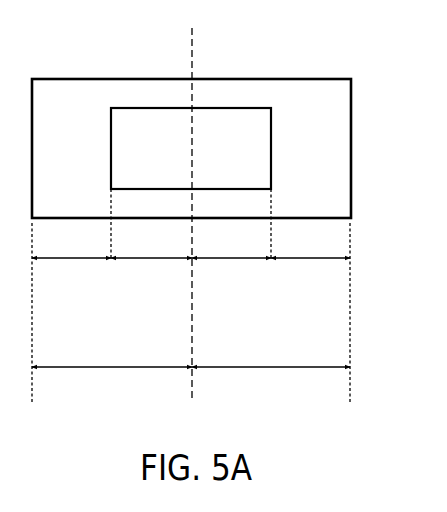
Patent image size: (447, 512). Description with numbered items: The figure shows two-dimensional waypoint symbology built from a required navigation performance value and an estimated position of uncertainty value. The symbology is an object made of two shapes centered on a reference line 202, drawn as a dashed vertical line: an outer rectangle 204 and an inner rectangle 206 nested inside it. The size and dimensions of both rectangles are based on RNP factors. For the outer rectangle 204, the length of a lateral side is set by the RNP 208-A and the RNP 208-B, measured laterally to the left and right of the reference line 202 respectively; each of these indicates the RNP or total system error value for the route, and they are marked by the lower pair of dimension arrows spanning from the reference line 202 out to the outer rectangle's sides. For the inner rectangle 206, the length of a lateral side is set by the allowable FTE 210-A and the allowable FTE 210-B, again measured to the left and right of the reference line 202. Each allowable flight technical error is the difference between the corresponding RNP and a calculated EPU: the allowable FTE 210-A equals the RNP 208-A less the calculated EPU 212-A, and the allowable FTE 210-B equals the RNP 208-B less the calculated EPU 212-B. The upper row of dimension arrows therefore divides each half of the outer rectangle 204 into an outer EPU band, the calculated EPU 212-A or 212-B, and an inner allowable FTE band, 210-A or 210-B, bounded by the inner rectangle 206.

The reference line 202 is at (193, 45).
The outer rectangle 204 is at (68, 79).
The inner rectangle 206 is at (125, 108).
The RNP 208-A is at (105, 370).
The RNP 208-B is at (269, 370).
The allowable FTE 210-A is at (148, 261).
The allowable FTE 210-B is at (236, 261).
The calculated EPU 212-A is at (72, 261).
The calculated EPU 212-B is at (311, 261).